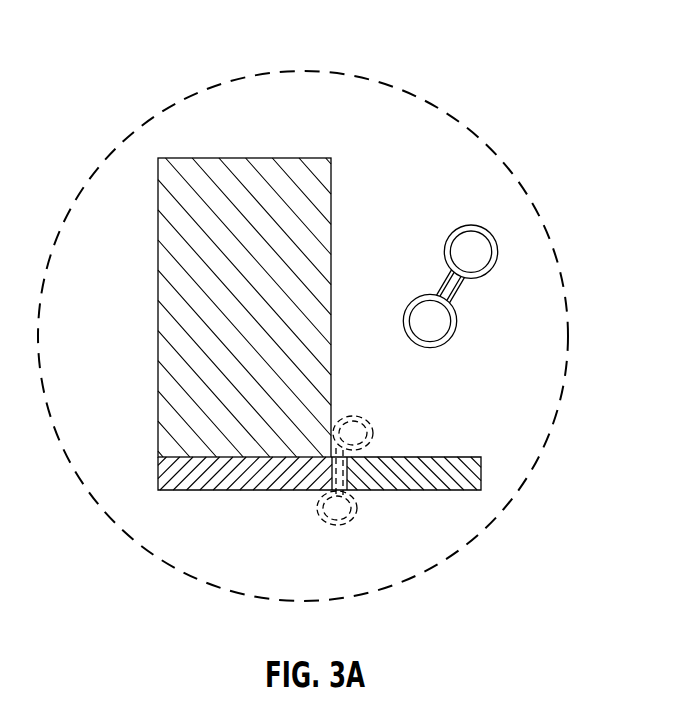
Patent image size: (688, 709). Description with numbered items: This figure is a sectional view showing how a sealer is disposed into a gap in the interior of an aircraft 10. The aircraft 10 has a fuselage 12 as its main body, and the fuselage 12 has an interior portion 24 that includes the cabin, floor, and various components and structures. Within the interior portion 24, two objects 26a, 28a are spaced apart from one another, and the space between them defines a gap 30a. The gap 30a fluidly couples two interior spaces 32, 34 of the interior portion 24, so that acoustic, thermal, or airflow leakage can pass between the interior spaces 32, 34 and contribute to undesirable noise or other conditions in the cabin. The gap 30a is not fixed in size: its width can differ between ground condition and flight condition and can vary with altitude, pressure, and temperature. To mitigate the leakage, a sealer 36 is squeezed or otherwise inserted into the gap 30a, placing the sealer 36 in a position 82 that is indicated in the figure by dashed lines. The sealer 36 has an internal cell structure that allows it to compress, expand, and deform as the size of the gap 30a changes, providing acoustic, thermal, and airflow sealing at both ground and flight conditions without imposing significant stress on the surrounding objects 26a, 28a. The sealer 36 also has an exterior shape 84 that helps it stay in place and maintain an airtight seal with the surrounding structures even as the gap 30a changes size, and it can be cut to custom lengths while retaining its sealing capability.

The aircraft 10 is at (188, 62).
The fuselage 12 is at (454, 118).
The interior portion 24 is at (538, 208).
The object 26a is at (158, 312).
The object 28a is at (462, 478).
The gap 30a is at (308, 498).
The interior space 32 is at (426, 515).
The interior space 34 is at (550, 335).
The sealer 36 is at (455, 222).
The position 82 is at (371, 427).
The exterior shape 84 is at (486, 273).